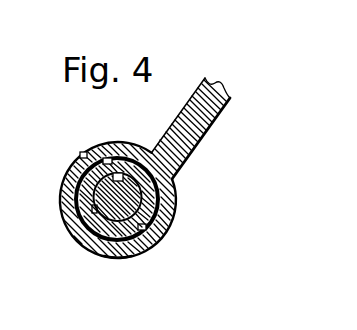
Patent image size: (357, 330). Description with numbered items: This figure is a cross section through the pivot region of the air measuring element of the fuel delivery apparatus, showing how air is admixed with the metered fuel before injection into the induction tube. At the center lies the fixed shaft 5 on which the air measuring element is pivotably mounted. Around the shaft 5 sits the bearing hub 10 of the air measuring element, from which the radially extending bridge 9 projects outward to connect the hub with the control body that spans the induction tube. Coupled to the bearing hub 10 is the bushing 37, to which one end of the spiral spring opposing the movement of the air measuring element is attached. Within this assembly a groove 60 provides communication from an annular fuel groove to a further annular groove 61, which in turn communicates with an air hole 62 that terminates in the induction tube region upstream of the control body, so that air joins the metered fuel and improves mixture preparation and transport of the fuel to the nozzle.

The shaft 5 is at (150, 204).
The bridge 9 is at (203, 115).
The bearing hub 10 is at (113, 248).
The bushing 37 is at (163, 238).
The groove 60 is at (118, 173).
The annular groove 61 is at (80, 225).
The air hole 62 is at (84, 155).